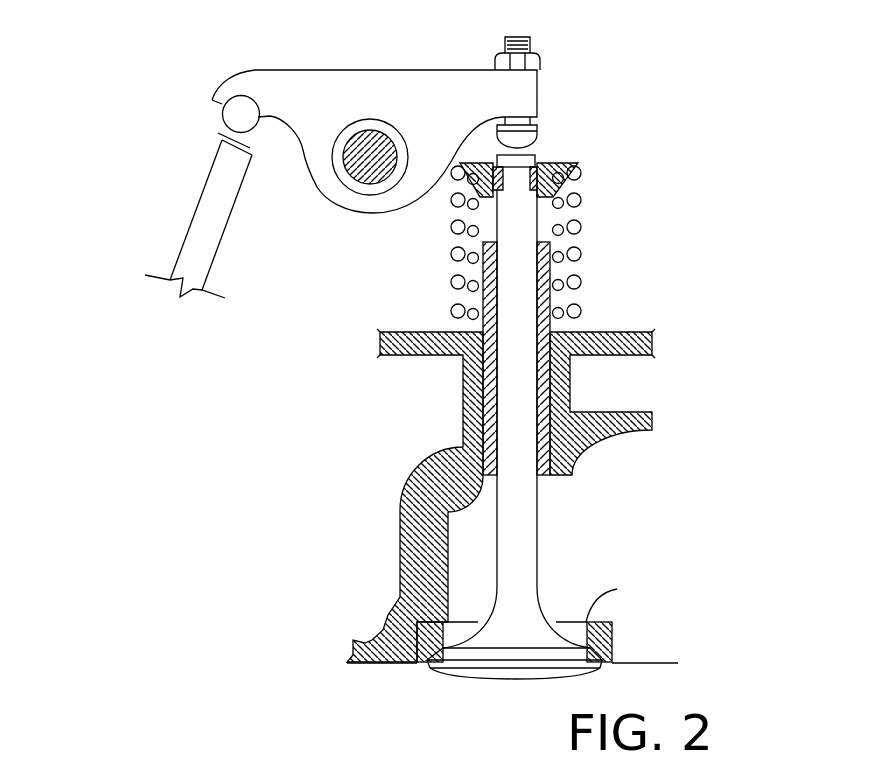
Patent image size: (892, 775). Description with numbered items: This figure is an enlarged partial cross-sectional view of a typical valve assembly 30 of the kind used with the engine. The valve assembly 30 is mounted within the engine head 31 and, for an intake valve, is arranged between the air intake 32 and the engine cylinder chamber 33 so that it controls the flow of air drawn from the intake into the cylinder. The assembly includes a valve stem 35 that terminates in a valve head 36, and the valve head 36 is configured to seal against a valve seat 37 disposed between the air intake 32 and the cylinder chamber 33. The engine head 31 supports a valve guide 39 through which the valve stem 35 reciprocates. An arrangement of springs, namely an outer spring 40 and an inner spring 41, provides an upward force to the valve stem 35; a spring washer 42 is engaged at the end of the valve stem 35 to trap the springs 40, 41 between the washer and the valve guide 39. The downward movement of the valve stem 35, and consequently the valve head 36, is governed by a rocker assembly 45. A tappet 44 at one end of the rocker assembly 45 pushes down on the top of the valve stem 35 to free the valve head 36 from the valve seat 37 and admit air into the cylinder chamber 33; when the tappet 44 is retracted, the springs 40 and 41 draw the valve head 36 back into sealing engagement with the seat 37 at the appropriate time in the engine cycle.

The valve assembly 30 is at (656, 102).
The engine head 31 is at (633, 331).
The air intake 32 is at (529, 473).
The engine cylinder chamber 33 is at (532, 718).
The valve stem 35 is at (539, 547).
The valve head 36 is at (451, 672).
The valve seat 37 is at (613, 623).
The valve guide 39 is at (476, 390).
The outer spring 40 is at (581, 227).
The inner spring 41 is at (556, 313).
The spring washer 42 is at (578, 167).
The tappet 44 is at (533, 128).
The rocker assembly 45 is at (381, 70).